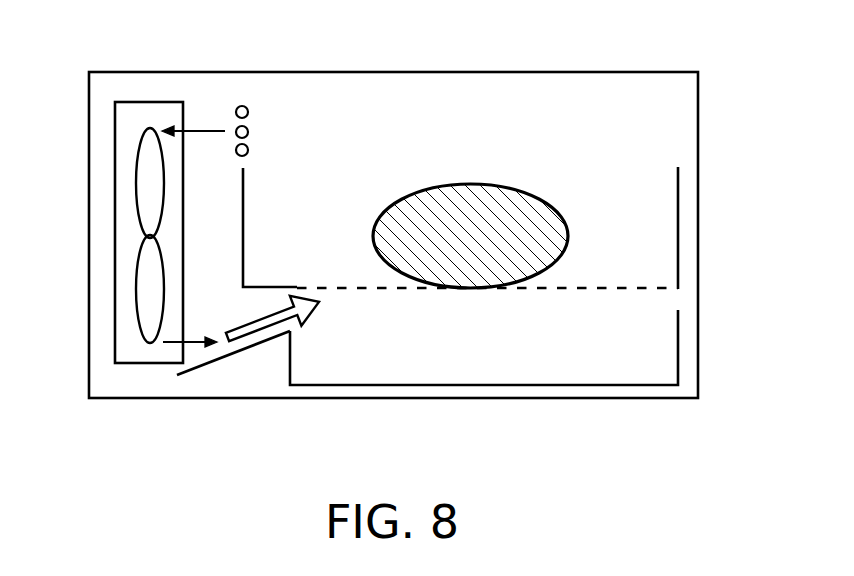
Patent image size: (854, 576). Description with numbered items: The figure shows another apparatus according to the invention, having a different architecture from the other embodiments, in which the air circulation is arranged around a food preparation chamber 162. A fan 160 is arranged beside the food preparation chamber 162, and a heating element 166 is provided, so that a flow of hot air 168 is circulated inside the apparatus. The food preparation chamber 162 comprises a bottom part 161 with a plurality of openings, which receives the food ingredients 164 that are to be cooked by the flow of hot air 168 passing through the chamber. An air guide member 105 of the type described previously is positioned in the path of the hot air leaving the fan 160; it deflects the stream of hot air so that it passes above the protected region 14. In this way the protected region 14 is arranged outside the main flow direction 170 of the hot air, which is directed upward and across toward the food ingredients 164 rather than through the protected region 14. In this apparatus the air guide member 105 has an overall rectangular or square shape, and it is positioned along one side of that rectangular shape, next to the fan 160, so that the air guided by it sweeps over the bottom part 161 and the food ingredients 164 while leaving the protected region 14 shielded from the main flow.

The protected region 14 is at (482, 362).
The air guide member 105 is at (238, 352).
The fan 160 is at (135, 184).
The bottom part 161 is at (600, 288).
The food preparation chamber 162 is at (678, 205).
The food ingredients 164 is at (483, 184).
The heating element 166 is at (242, 106).
The flow of hot air 168 is at (205, 131).
The main flow direction 170 is at (302, 316).